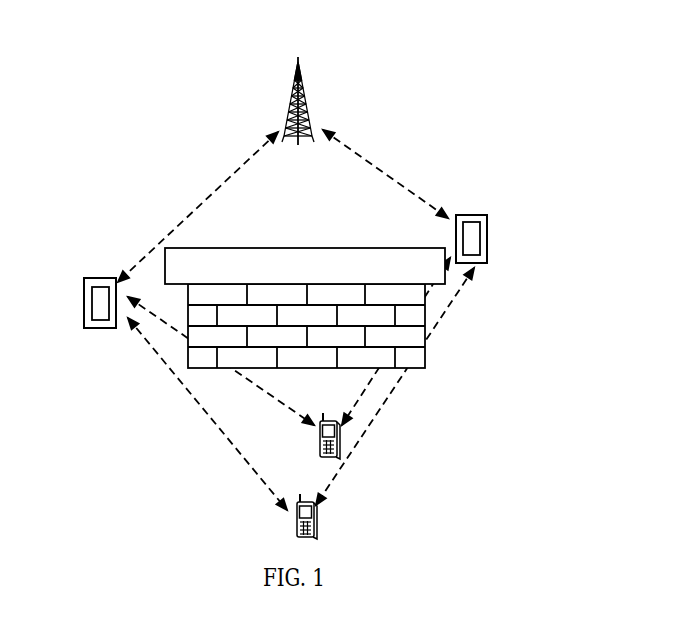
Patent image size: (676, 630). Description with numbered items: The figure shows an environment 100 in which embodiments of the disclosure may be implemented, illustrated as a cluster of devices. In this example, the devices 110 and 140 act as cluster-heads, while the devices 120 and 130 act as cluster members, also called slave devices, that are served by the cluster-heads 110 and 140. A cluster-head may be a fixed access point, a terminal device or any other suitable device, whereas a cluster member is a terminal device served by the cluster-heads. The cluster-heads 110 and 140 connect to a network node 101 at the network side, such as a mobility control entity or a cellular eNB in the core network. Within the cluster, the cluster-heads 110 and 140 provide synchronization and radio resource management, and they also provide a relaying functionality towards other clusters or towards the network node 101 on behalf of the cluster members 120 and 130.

The environment 100 is at (124, 33).
The network node 101 is at (284, 114).
The device 110 is at (84, 296).
The device 120 is at (319, 450).
The device 130 is at (318, 527).
The device 140 is at (489, 240).